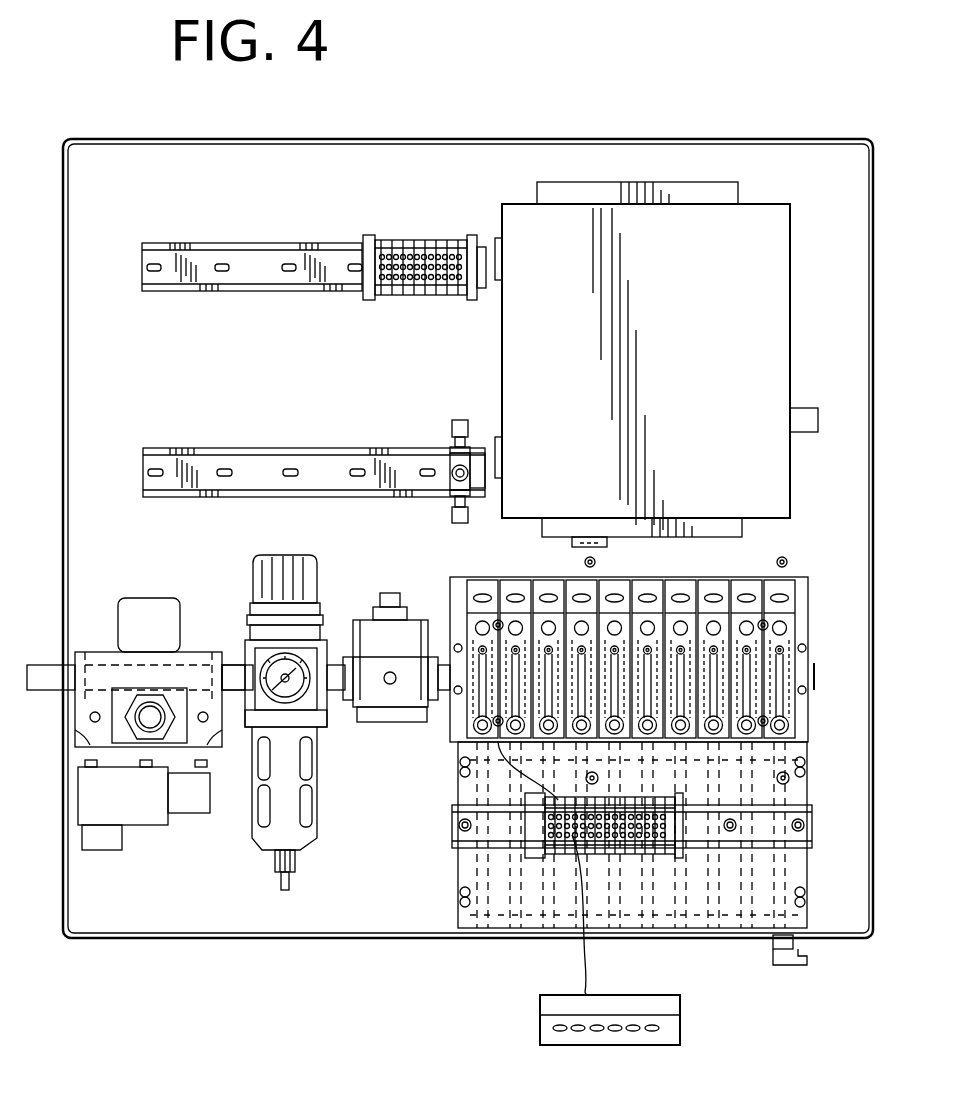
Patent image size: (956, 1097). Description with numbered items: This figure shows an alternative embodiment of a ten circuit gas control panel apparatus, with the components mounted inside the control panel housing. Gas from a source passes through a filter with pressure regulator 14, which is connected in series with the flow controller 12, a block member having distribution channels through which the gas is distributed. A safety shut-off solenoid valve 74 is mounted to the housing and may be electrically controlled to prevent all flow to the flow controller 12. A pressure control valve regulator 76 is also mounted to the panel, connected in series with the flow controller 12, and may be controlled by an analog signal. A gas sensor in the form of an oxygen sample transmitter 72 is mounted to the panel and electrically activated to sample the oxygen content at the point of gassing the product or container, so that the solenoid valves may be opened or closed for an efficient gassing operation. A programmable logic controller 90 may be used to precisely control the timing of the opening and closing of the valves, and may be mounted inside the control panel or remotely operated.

The flow controller 12 is at (812, 643).
The filter with pressure regulator 14 is at (265, 787).
The oxygen sample transmitter 72 is at (778, 324).
The safety shut-off solenoid valve 74 is at (98, 735).
The pressure control valve regulator 76 is at (393, 715).
The programmable logic controller 90 is at (680, 1005).